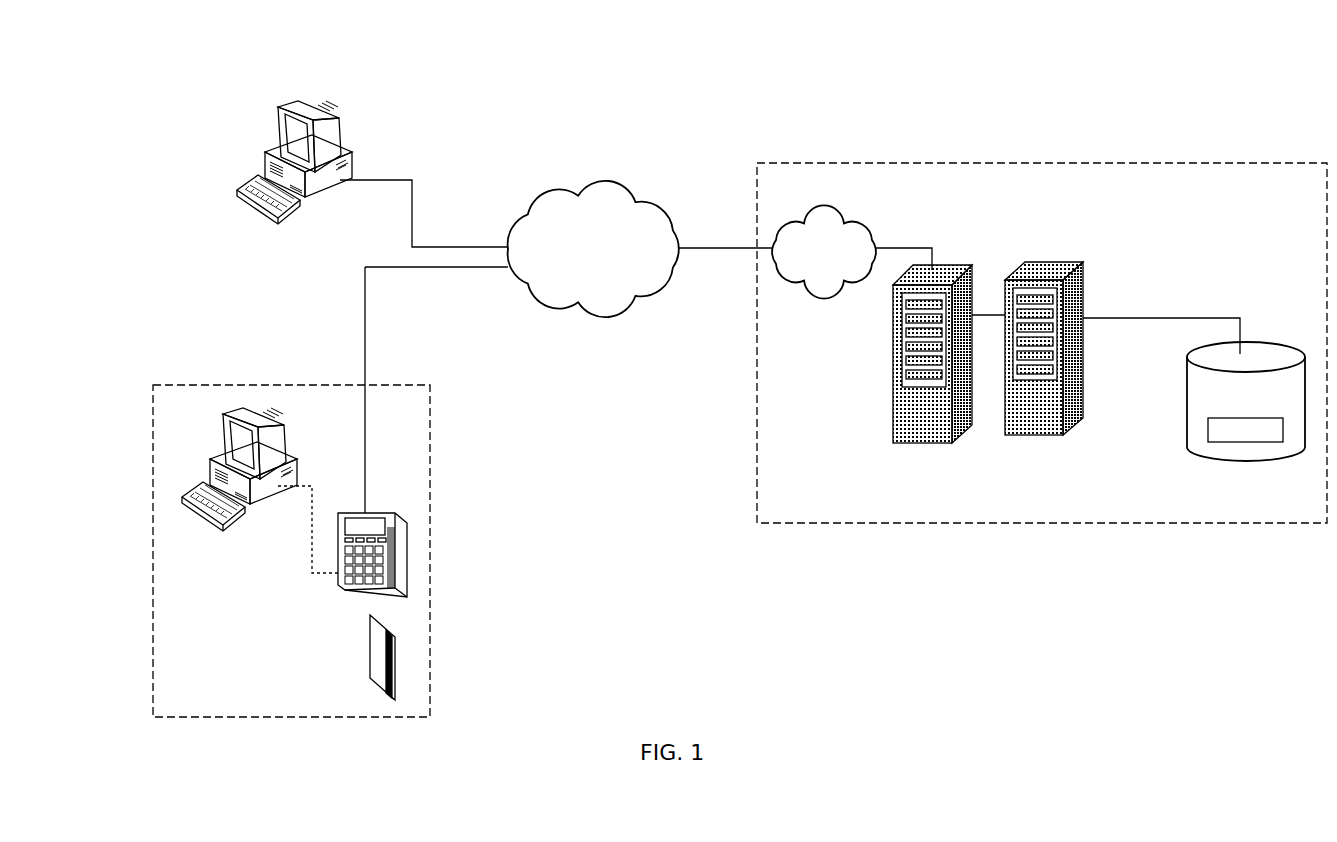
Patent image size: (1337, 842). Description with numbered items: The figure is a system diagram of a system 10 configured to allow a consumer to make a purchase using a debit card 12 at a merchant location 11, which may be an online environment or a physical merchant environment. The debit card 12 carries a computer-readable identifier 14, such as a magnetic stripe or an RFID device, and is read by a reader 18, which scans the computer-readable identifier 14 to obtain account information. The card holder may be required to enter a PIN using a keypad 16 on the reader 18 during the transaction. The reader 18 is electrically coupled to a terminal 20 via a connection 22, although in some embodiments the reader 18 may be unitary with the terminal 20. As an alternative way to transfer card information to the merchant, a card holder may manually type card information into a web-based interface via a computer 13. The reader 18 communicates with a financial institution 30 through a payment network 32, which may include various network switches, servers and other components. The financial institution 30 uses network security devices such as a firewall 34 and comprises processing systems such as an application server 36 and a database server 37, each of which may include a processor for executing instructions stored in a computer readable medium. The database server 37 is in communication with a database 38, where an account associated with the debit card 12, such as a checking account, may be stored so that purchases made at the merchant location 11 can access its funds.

The system 10 is at (863, 51).
The merchant location 11 is at (408, 385).
The debit card 12 is at (368, 656).
The computer 13 is at (328, 118).
The computer-readable identifier 14 is at (390, 636).
The keypad 16 is at (338, 562).
The reader 18 is at (380, 513).
The terminal 20 is at (279, 432).
The connection 22 is at (312, 497).
The financial institution 30 is at (1023, 162).
The payment network 32 is at (648, 186).
The firewall 34 is at (850, 218).
The application server 36 is at (948, 268).
The database server 37 is at (1056, 262).
The database 38 is at (1258, 347).